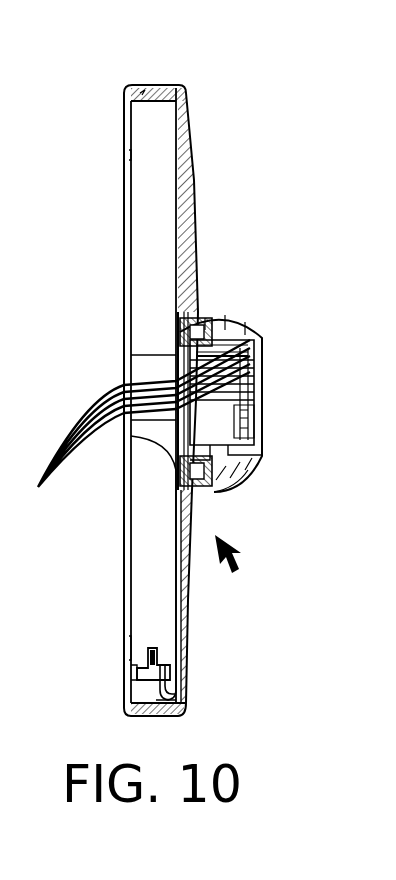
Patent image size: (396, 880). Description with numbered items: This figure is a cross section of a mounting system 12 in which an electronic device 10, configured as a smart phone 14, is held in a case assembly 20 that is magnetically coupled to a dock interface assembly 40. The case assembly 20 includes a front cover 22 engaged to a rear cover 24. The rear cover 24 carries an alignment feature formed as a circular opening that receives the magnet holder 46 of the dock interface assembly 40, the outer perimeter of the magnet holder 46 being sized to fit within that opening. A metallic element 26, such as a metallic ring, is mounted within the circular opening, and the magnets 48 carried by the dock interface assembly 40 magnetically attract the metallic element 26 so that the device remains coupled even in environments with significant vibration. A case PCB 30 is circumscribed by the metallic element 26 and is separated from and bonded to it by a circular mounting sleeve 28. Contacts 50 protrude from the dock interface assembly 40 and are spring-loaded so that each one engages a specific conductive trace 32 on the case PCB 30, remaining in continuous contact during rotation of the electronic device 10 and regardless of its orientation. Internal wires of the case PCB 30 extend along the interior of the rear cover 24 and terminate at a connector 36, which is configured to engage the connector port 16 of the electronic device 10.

The electronic device 10 is at (124, 228).
The mounting system 12 is at (239, 568).
The smart phone 14 is at (124, 283).
The connector port 16 is at (150, 660).
The case assembly 20 is at (180, 86).
The front cover 22 is at (125, 92).
The rear cover 24 is at (190, 152).
The metallic element 26 is at (182, 468).
The circular mounting sleeve 28 is at (124, 362).
The case PCB 30 is at (124, 440).
The conductive traces 32 is at (136, 431).
The connector 36 is at (138, 673).
The dock interface assembly 40 is at (265, 395).
The magnet holder 46 is at (200, 322).
The magnets 48 is at (205, 490).
The contacts 50 is at (208, 352).